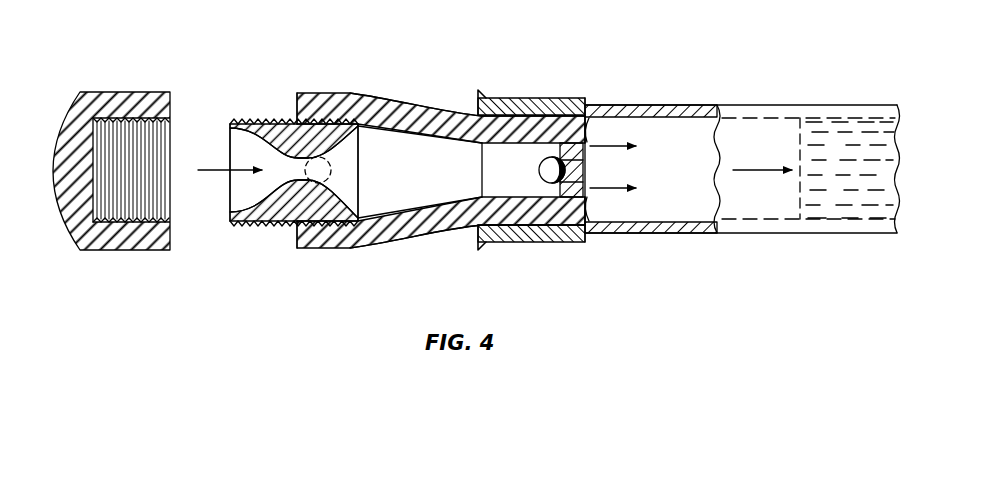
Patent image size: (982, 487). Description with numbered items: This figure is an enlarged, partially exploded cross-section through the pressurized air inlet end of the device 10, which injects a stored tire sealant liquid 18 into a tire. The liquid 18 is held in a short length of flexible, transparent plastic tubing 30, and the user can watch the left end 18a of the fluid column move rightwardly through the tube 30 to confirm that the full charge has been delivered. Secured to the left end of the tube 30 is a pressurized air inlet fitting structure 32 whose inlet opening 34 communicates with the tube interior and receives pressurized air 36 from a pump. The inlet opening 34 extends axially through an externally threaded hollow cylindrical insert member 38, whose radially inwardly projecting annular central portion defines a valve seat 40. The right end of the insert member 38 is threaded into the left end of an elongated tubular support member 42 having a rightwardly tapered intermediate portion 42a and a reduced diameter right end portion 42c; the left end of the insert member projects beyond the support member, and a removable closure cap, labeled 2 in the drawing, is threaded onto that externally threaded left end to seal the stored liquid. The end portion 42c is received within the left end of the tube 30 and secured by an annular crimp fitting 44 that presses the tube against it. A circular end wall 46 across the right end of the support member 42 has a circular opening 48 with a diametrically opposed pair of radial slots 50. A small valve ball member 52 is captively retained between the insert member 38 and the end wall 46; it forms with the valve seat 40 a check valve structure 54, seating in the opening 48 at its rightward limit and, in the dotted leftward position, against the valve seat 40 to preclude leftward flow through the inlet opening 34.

The cap 2 is at (80, 95).
The device 10 is at (640, 46).
The tire sealant liquid 18 is at (845, 118).
The left end of the fluid column 18a is at (794, 116).
The tubing 30 is at (696, 234).
The pressurized air inlet fitting structure 32 is at (378, 90).
The inlet opening 34 is at (232, 186).
The pressurized air 36 is at (212, 168).
The insert member 38 is at (288, 191).
The valve seat 40 is at (356, 179).
The support member 42 is at (440, 194).
The tapered intermediate portion 42a is at (442, 230).
The reduced diameter right end portion 42c is at (524, 216).
The crimp fitting 44 is at (520, 98).
The circular end wall 46 is at (590, 204).
The circular opening 48 is at (582, 172).
The radial slots 50 is at (593, 124).
The valve ball member 52 is at (551, 170).
The check valve structure 54 is at (343, 150).